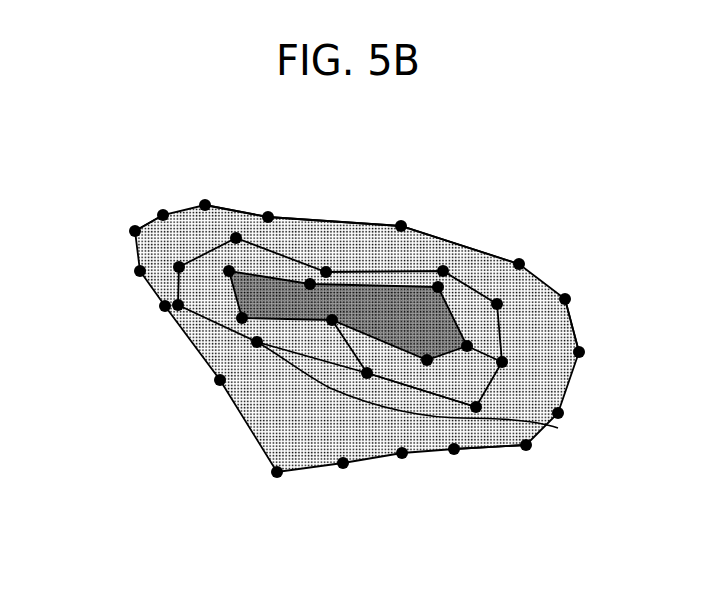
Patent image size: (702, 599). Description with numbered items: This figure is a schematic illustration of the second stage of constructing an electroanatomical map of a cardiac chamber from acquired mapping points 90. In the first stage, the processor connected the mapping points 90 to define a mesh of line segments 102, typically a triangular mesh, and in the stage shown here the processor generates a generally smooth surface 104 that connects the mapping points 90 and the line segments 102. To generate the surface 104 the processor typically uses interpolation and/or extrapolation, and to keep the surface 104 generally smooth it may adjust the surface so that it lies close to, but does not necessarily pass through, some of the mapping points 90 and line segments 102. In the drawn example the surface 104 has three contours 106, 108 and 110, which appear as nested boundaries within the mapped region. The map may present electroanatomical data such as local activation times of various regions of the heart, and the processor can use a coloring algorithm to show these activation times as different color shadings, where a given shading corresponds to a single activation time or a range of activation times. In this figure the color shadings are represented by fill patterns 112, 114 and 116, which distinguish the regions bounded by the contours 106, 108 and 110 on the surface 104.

The mapping points 90 is at (140, 271).
The line segments 102 is at (433, 238).
The surface 104 is at (562, 225).
The contour 106 is at (305, 320).
The contour 108 is at (385, 378).
The contour 110 is at (483, 448).
The fill pattern 112 is at (577, 332).
The fill pattern 114 is at (467, 346).
The fill pattern 116 is at (558, 428).